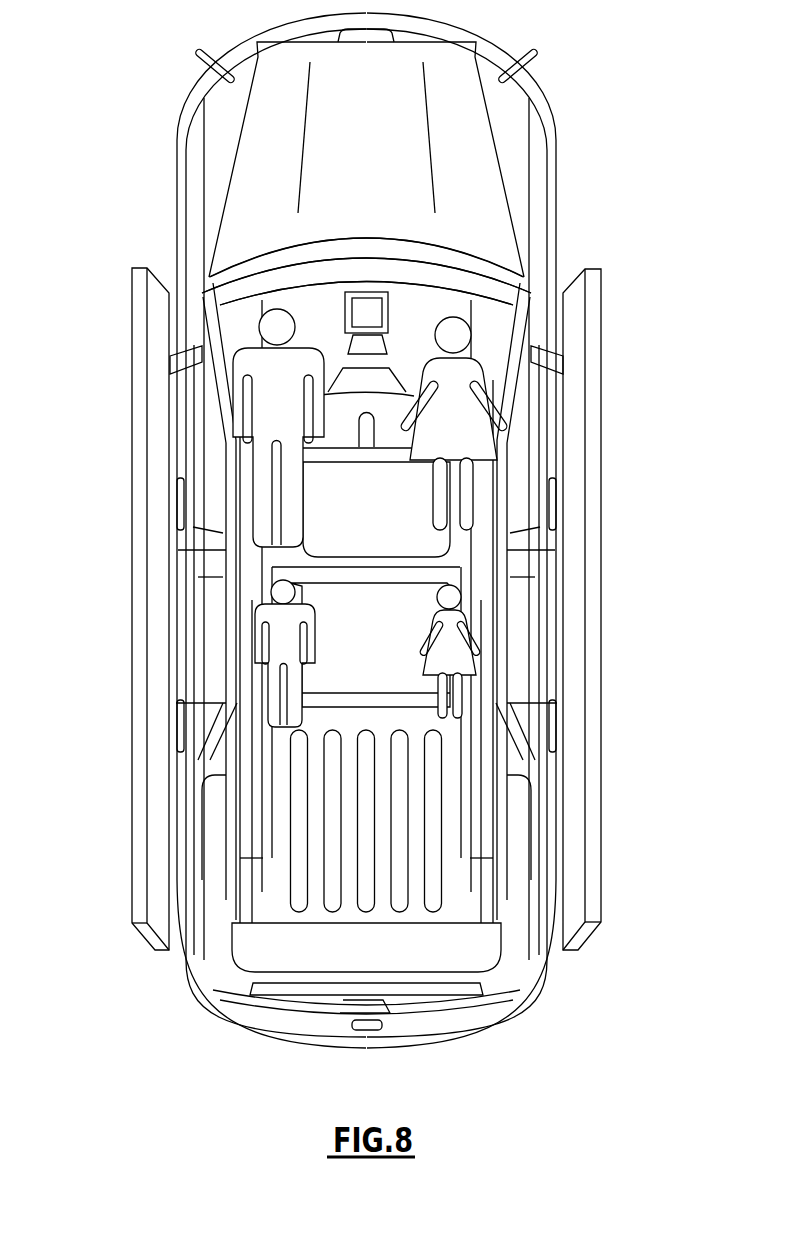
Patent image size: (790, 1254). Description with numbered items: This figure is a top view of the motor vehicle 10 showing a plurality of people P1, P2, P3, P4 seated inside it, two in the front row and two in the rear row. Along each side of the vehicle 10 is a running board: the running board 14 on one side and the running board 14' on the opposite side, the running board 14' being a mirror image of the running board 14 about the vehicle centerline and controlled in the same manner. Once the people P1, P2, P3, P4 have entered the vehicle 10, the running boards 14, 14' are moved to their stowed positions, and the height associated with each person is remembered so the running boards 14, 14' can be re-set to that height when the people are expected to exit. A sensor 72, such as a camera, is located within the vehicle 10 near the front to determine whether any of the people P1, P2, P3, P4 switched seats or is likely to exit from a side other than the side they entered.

The vehicle 10 is at (155, 190).
The running board 14 is at (122, 645).
The running board 14' is at (614, 645).
The sensor 72 is at (363, 292).
The person P1 is at (313, 340).
The person P2 is at (430, 360).
The person P3 is at (305, 600).
The person P4 is at (425, 627).